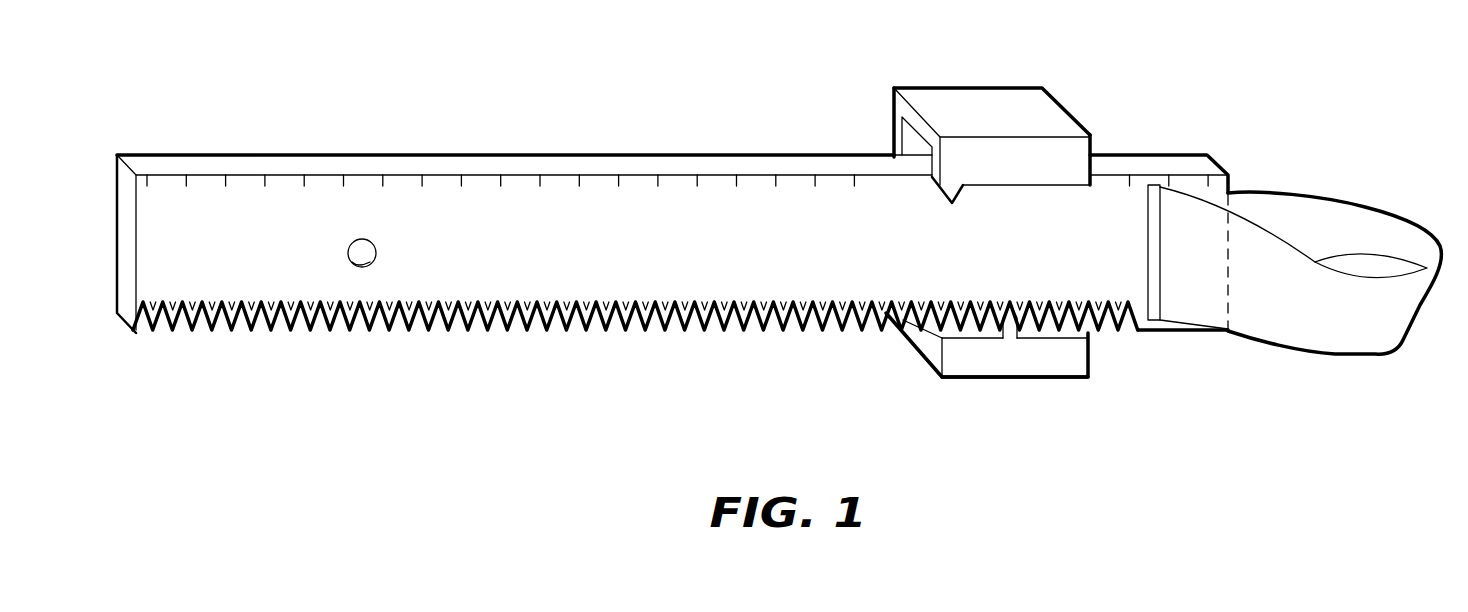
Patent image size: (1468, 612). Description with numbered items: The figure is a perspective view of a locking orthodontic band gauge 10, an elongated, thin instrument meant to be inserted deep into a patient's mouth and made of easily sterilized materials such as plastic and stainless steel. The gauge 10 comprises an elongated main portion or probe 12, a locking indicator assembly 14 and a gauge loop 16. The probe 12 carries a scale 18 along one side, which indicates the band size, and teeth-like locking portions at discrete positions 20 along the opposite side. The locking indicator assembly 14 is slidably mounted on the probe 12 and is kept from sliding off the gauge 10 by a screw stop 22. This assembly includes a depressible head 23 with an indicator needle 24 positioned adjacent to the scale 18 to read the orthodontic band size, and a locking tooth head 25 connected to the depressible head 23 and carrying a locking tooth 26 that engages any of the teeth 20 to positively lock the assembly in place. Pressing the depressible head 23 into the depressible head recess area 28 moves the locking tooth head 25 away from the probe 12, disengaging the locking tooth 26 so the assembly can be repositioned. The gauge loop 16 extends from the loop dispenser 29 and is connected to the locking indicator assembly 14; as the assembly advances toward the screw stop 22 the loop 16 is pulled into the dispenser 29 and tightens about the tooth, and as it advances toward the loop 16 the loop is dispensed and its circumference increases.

The locking orthodontic band gauge 10 is at (713, 132).
The probe 12 is at (443, 170).
The locking indicator assembly 14 is at (1012, 102).
The gauge loop 16 is at (1407, 228).
The scale 18 is at (579, 180).
The teeth 20 is at (738, 329).
The screw stop 22 is at (375, 252).
The depressible head 23 is at (1067, 127).
The indicator needle 24 is at (952, 205).
The locking tooth head 25 is at (1080, 370).
The locking tooth 26 is at (1012, 340).
The depressible head recess area 28 is at (908, 130).
The loop dispenser 29 is at (1151, 184).